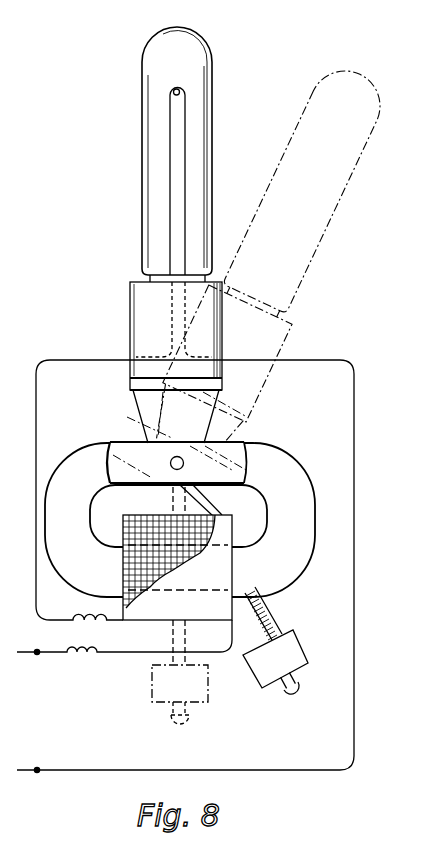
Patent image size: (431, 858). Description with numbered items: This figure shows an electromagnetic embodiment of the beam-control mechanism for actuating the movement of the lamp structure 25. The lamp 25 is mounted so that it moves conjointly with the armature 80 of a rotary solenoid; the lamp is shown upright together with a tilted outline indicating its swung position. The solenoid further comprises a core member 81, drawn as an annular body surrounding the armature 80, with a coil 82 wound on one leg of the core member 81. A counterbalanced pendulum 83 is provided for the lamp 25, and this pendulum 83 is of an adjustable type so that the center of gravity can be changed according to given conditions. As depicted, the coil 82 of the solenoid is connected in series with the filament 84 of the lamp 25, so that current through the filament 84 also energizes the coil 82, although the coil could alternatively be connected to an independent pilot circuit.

The lamp structure 25 is at (163, 42).
The filament 84 is at (180, 106).
The armature 80 is at (128, 447).
The core member 81 is at (285, 470).
The coil 82 is at (133, 515).
The counterbalanced pendulum 83 is at (293, 650).